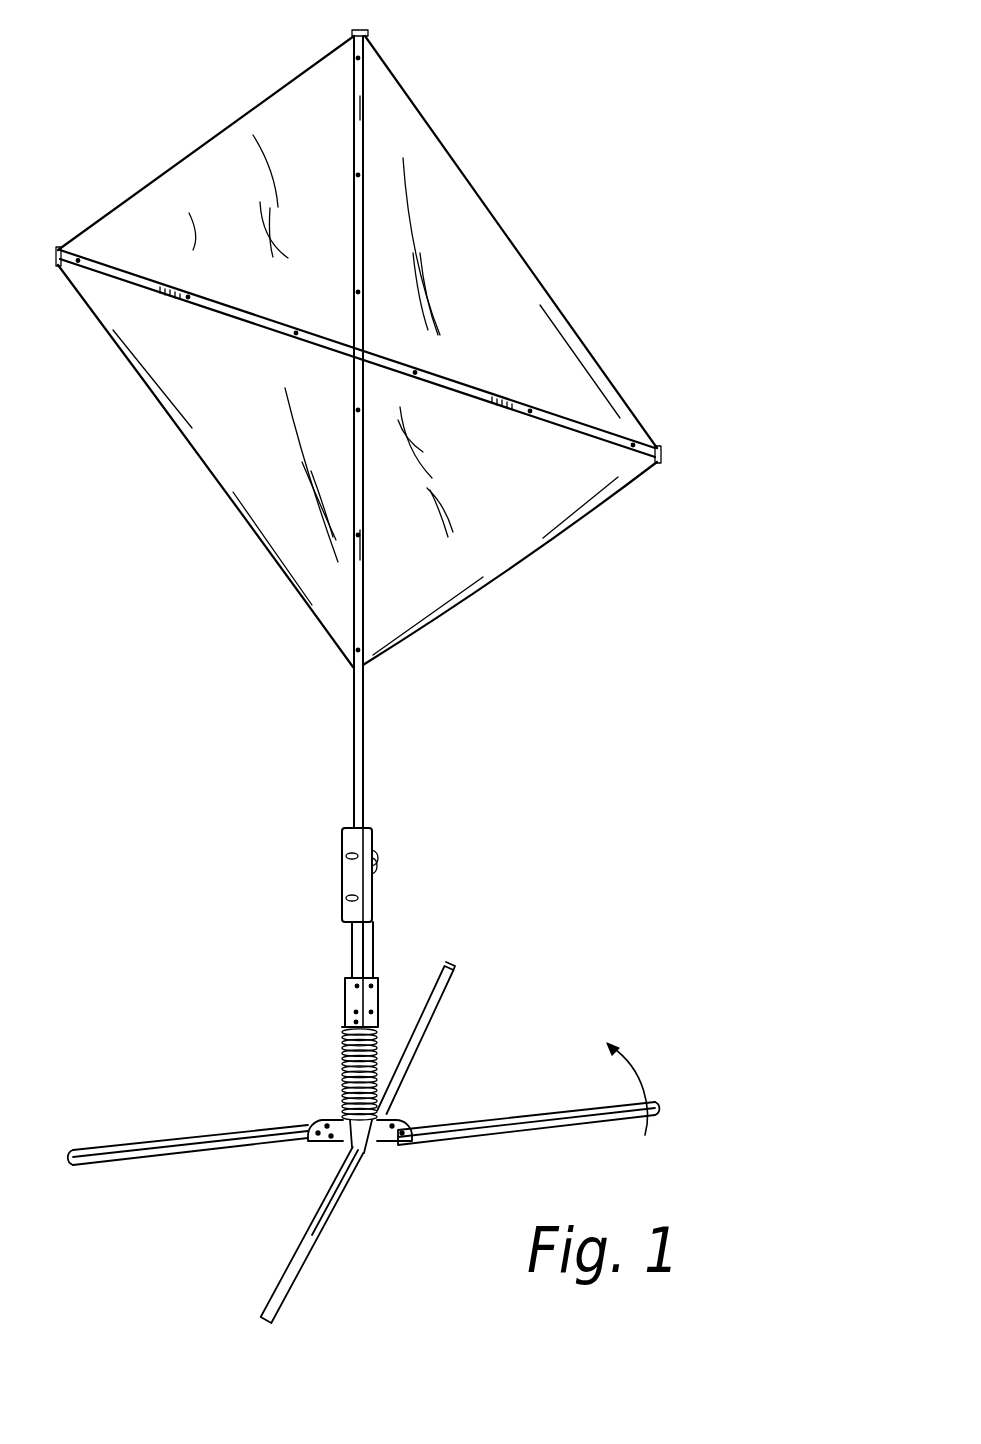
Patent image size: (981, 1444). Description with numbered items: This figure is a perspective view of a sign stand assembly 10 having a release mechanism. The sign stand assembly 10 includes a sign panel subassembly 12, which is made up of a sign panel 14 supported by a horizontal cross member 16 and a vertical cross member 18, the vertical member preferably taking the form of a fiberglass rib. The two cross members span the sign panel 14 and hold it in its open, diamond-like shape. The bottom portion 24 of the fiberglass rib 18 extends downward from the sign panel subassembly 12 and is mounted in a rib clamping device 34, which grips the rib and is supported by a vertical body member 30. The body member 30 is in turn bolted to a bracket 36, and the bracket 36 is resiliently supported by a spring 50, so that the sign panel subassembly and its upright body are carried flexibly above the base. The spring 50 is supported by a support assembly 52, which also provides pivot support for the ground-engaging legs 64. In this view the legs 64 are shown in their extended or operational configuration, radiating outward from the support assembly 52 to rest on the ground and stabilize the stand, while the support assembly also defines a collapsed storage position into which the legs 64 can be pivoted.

The sign stand assembly 10 is at (556, 150).
The sign panel subassembly 12 is at (594, 352).
The sign panel 14 is at (508, 540).
The horizontal cross member 16 is at (470, 402).
The vertical cross member 18 is at (366, 348).
The bottom portion 24 is at (364, 732).
The vertical body member 30 is at (373, 942).
The rib clamping device 34 is at (342, 871).
The bracket 36 is at (345, 1002).
The spring 50 is at (343, 1068).
The support assembly 52 is at (381, 1132).
The ground-engaging legs 64 is at (437, 1003).